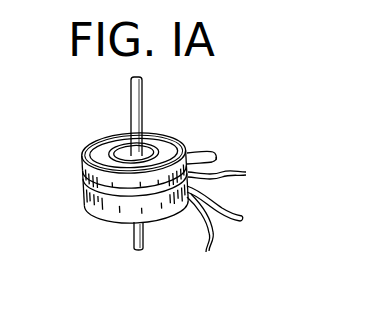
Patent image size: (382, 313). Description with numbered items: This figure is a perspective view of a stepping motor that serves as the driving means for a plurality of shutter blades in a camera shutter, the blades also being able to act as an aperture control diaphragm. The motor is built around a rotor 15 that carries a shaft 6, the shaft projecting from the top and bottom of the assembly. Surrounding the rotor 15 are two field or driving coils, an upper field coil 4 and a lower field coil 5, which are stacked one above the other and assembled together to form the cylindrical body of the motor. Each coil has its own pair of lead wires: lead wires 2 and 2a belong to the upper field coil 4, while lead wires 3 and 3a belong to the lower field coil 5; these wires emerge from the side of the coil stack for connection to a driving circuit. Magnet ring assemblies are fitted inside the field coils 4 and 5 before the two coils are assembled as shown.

The lead wire 2 is at (213, 152).
The lead wire 2a is at (231, 174).
The lead wire 3 is at (242, 219).
The lead wire 3a is at (208, 238).
The field coil 4 is at (88, 173).
The field coil 5 is at (90, 208).
The shaft 6 is at (134, 239).
The rotor 15 is at (123, 148).